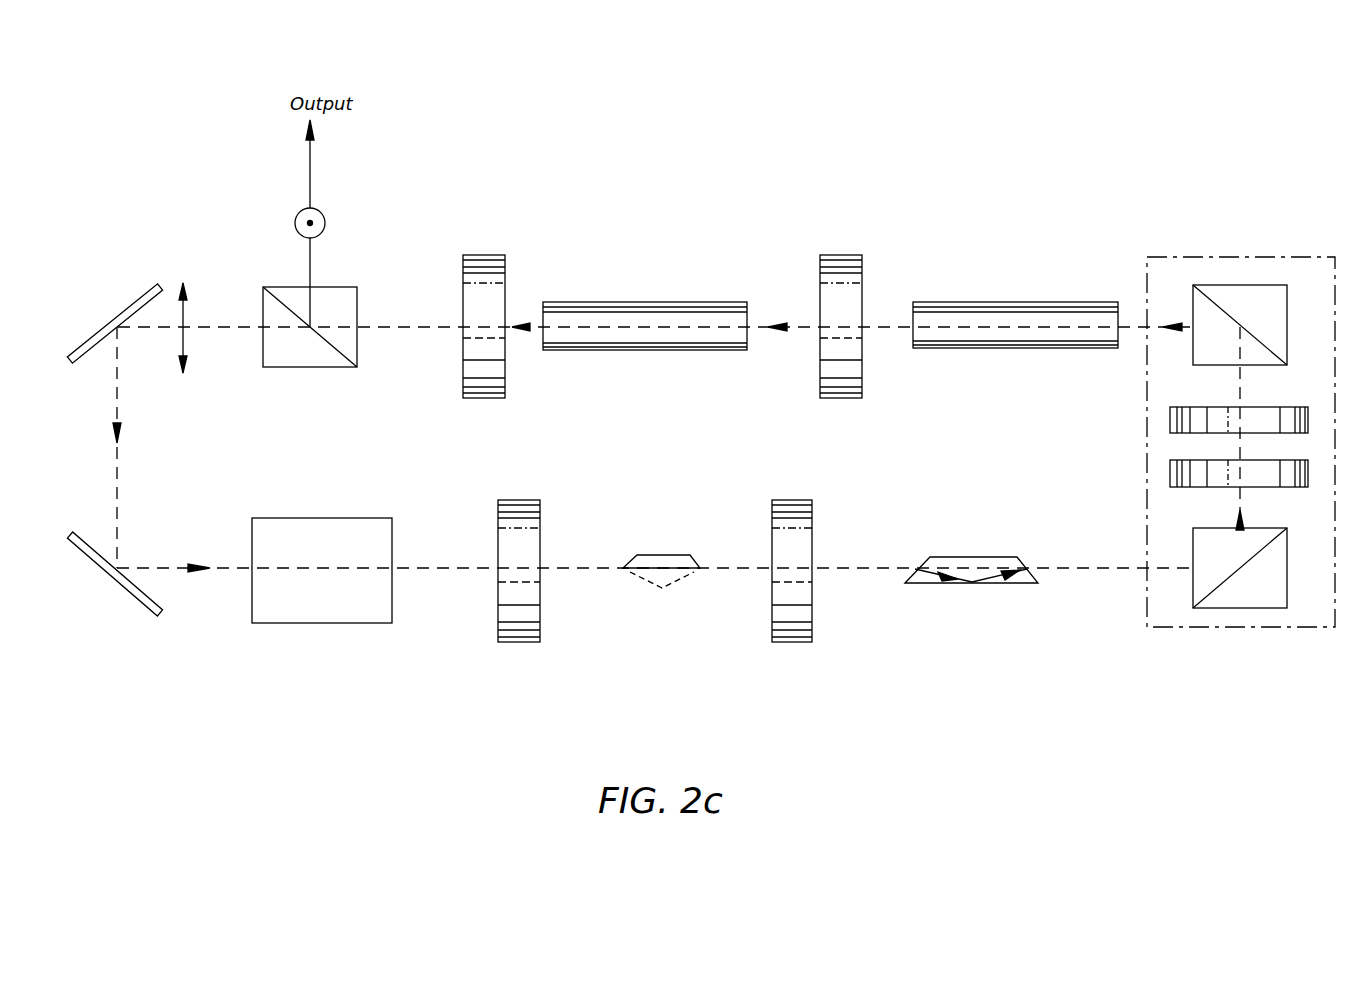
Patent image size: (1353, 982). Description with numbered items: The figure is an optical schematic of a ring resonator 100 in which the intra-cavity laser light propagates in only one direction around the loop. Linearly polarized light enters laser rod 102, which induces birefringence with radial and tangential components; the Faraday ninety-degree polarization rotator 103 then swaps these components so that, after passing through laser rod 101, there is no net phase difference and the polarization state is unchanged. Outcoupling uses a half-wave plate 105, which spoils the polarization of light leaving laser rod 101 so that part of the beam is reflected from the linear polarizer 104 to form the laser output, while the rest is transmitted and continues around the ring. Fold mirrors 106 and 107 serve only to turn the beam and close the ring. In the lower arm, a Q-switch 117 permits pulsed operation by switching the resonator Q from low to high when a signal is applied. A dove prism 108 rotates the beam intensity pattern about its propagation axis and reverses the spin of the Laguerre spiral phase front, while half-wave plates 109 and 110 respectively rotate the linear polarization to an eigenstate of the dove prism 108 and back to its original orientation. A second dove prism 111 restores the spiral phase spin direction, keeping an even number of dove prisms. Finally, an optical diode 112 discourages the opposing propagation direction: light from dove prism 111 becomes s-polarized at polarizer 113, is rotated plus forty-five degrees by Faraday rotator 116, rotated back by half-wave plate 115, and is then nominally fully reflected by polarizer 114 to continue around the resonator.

The ring resonator 100 is at (1040, 163).
The laser rod 101 is at (633, 302).
The laser rod 102 is at (982, 303).
The Faraday 90°-polarization rotator 103 is at (847, 255).
The linear polarizer 104 is at (282, 290).
The half-wave plate 105 is at (483, 255).
The fold mirror 106 is at (132, 307).
The fold mirror 107 is at (90, 560).
The dove prism 108 is at (660, 555).
The half-wave plate 109 is at (523, 627).
The half-wave plate 110 is at (795, 643).
The dove prism 111 is at (987, 587).
The optical diode 112 is at (1218, 257).
The linear polarizer 113 is at (1255, 608).
The polarizer 114 is at (1268, 283).
The half-wave plate 115 is at (1170, 420).
The Faraday rotator 116 is at (1170, 470).
The Q-switch 117 is at (318, 625).